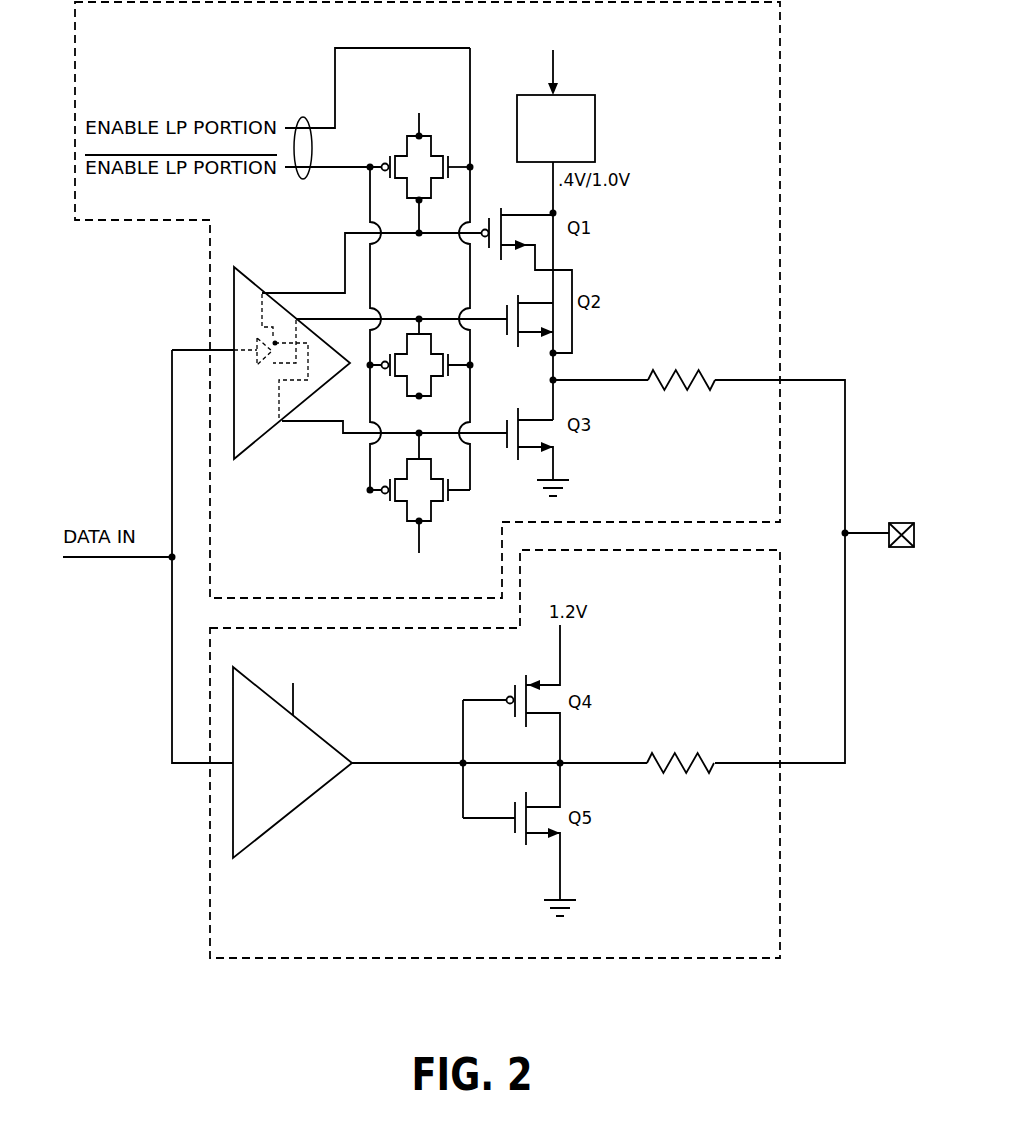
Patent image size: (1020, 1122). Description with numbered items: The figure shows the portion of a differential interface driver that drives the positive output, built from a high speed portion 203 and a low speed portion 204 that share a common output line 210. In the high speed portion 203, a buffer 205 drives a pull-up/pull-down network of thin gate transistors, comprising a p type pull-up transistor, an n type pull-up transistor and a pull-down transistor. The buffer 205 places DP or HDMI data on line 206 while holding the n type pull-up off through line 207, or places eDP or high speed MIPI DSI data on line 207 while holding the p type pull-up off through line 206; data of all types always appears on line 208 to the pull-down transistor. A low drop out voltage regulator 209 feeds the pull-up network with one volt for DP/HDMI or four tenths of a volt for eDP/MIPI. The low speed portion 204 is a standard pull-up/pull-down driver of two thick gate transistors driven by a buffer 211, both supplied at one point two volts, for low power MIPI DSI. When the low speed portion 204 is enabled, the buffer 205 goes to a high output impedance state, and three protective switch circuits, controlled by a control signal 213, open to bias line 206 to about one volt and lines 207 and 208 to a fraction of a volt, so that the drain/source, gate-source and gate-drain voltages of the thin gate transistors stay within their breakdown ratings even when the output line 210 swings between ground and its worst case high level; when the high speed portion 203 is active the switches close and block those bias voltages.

The high speed portion 203 is at (718, 89).
The low speed portion 204 is at (670, 671).
The buffer 205 is at (263, 435).
The line 206 is at (397, 236).
The line 207 is at (395, 317).
The line 208 is at (342, 433).
The low drop out voltage regulator 209 is at (541, 131).
The output line 210 is at (904, 522).
The buffer 211 is at (308, 800).
The control signal 213 is at (303, 117).